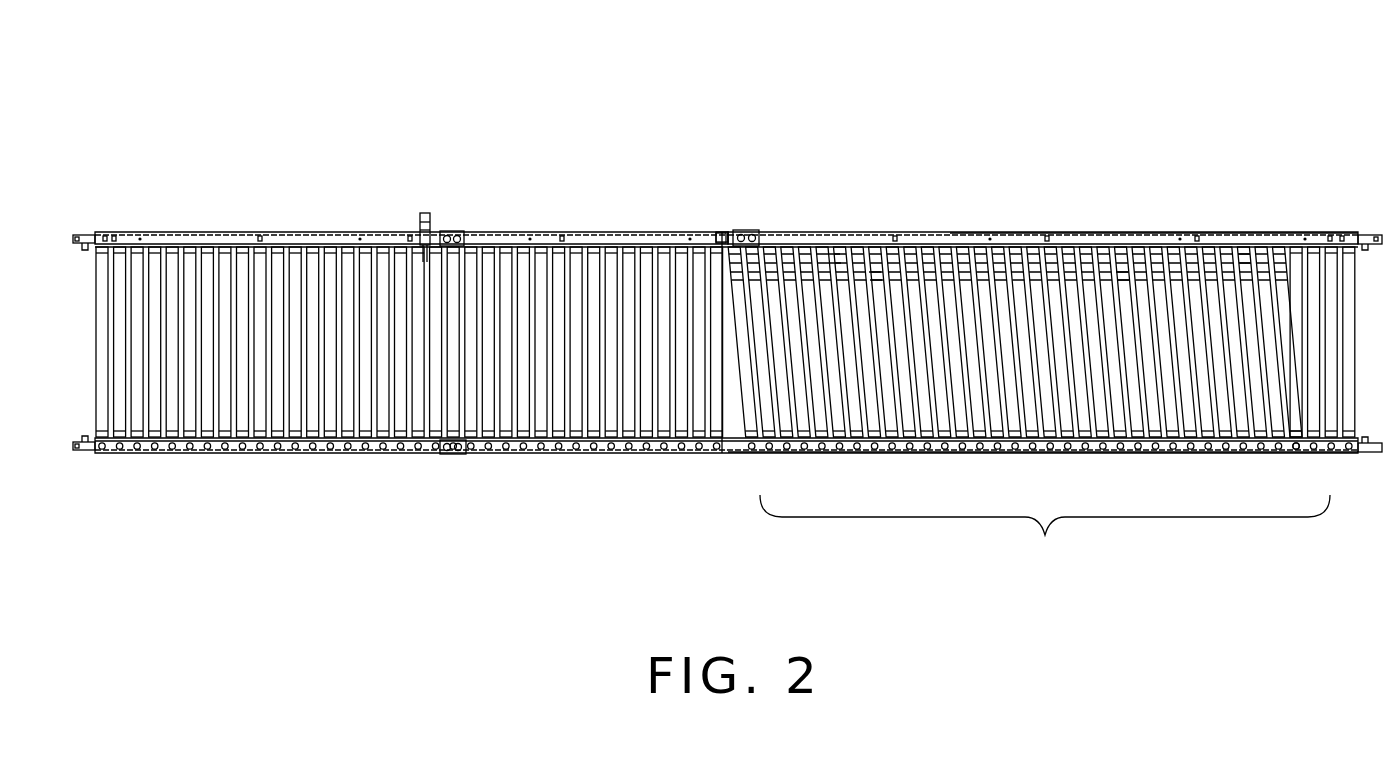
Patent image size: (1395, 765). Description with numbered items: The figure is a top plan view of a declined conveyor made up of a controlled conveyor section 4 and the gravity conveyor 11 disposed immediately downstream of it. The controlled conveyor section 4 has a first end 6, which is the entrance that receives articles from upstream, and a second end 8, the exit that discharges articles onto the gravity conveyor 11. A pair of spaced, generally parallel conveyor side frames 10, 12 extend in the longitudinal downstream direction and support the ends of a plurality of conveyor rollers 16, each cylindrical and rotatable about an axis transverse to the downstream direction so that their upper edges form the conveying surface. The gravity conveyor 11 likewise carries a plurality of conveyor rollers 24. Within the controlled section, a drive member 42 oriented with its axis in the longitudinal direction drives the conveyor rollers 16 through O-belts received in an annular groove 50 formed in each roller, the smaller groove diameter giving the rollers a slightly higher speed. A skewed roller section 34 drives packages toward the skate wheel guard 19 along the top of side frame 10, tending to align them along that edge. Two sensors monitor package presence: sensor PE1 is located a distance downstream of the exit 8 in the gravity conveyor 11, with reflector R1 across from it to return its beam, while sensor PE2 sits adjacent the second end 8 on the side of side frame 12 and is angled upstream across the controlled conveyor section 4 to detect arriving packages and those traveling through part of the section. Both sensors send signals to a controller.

The gravity conveyor 11 is at (593, 100).
The controlled conveyor section 4 is at (1093, 178).
The side frame 12 is at (1003, 232).
The first end 6 is at (1361, 232).
The skate wheel guard 19 is at (570, 456).
The side frame 10 is at (985, 455).
The second end 8 is at (722, 457).
The conveyor rollers 24 is at (277, 253).
The conveyor rollers 16 is at (820, 415).
The drive member 42 is at (848, 258).
The annular groove 50 is at (876, 250).
The sensor PE1 is at (426, 224).
The sensor PE2 is at (720, 232).
The reflector R1 is at (448, 456).
The skewed roller section 34 is at (1045, 538).